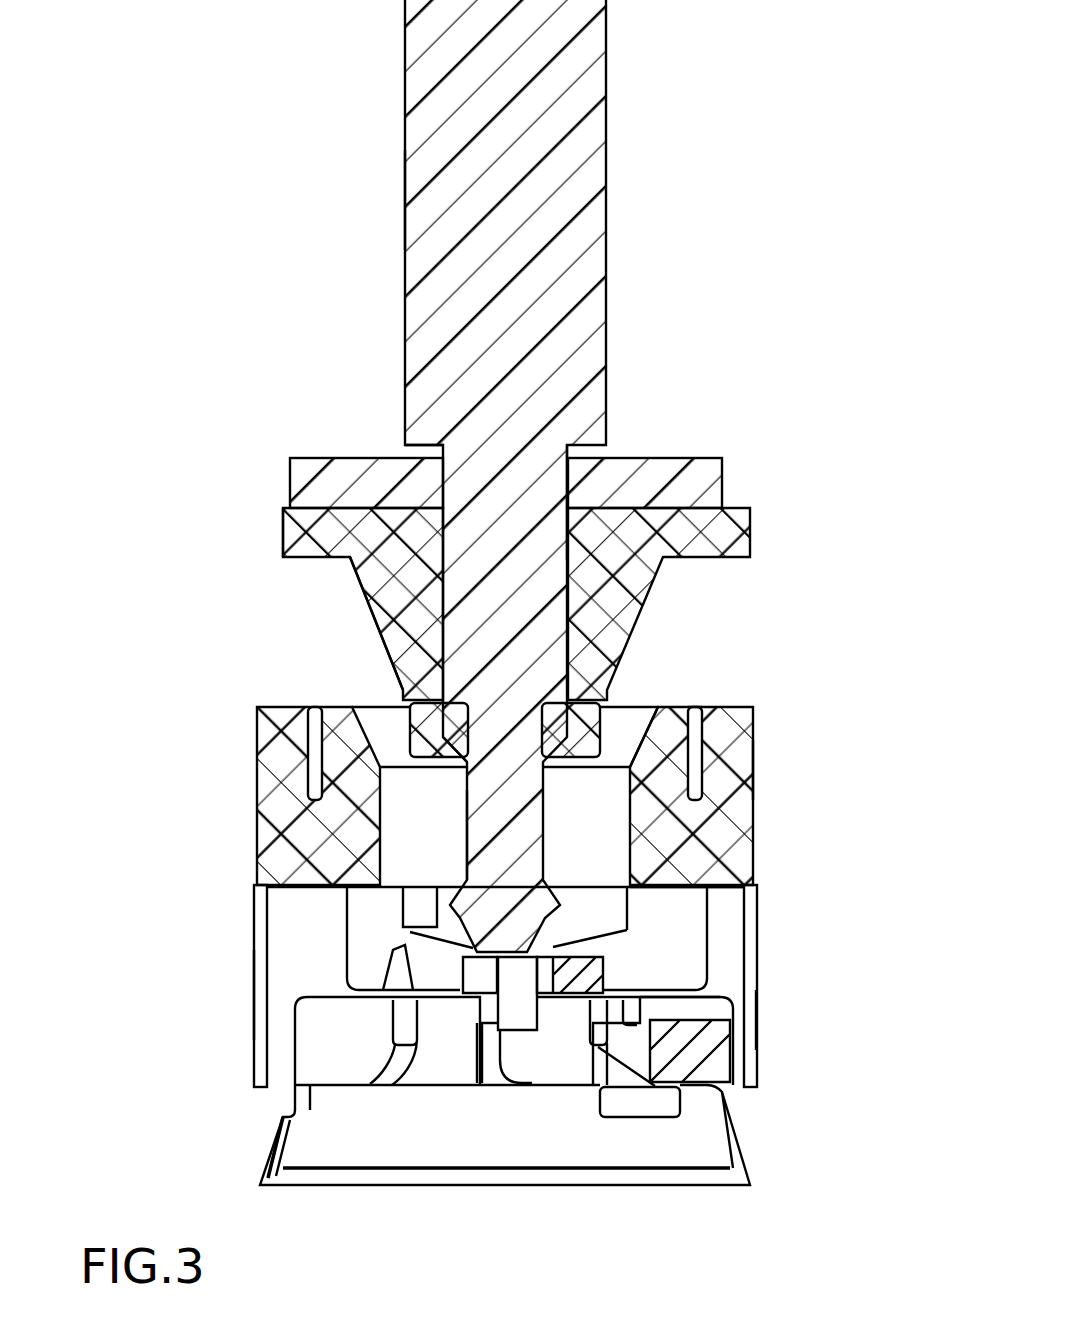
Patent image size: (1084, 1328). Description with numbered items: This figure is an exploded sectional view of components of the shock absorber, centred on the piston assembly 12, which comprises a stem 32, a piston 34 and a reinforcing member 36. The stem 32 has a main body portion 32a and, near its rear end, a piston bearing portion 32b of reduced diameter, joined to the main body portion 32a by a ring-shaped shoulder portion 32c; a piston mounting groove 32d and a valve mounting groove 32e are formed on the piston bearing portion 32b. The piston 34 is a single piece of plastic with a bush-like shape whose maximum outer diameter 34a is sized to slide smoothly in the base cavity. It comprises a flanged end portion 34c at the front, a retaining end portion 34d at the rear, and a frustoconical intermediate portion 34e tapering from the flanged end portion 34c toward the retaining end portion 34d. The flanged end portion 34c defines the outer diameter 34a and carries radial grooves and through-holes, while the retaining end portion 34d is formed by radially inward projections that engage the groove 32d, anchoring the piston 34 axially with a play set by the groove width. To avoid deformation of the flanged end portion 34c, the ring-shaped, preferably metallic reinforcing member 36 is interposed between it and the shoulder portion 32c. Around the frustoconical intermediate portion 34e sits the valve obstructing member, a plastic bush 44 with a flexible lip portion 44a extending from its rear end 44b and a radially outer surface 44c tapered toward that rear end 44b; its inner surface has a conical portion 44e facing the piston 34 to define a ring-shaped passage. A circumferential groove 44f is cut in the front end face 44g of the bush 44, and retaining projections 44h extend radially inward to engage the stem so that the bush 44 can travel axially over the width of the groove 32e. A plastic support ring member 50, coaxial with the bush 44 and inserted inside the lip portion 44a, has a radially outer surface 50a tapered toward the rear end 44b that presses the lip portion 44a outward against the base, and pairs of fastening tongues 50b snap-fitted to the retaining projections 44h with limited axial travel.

The piston assembly 12 is at (772, 330).
The stem 32 is at (609, 199).
The main body portion 32a is at (432, 208).
The piston bearing portion 32b is at (540, 470).
The ring-shaped shoulder portion 32c is at (400, 462).
The piston mounting groove 32d is at (415, 704).
The valve mounting groove 32e is at (465, 840).
The piston 34 is at (500, 597).
The maximum outer diameter 34a is at (750, 540).
The flanged end portion 34c is at (280, 511).
The retaining end portion 34d is at (420, 740).
The frustoconical intermediate portion 34e is at (375, 545).
The reinforcing member 36 is at (660, 480).
The bush 44 is at (520, 819).
The flexible lip portion 44a is at (757, 1012).
The rear end 44b is at (757, 902).
The radially outer surface 44c is at (262, 988).
The conical portion 44e is at (645, 725).
The circumferential groove 44f is at (703, 790).
The front end face 44g is at (727, 705).
The retaining projections 44h is at (672, 965).
The support ring member 50 is at (582, 1178).
The radially outer surface 50a is at (755, 1180).
The fastening tongues 50b is at (645, 1105).